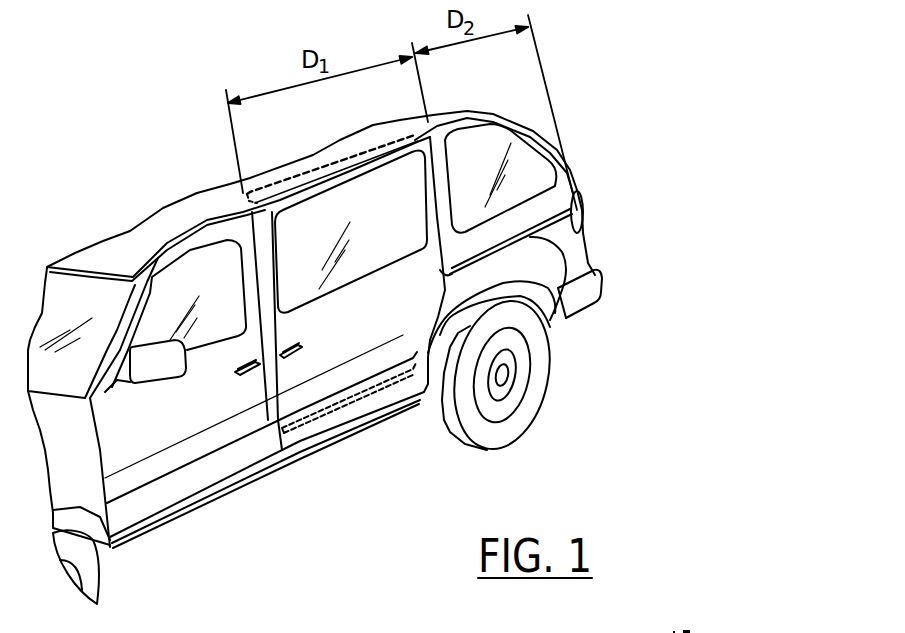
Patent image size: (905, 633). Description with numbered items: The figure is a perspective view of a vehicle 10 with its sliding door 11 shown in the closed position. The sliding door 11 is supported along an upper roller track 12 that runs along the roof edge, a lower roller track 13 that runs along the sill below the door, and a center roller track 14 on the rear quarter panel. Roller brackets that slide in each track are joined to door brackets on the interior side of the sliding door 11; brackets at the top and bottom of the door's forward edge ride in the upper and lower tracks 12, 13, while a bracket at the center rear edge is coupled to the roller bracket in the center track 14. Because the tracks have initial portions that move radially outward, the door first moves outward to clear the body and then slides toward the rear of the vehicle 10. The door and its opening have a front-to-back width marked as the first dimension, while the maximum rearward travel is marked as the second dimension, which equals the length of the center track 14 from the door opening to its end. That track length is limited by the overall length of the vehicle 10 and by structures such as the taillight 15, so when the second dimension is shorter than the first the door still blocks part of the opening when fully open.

The vehicle 10 is at (141, 552).
The sliding door 11 is at (400, 347).
The upper roller track 12 is at (264, 194).
The lower roller track 13 is at (309, 429).
The center roller track 14 is at (578, 310).
The taillight 15 is at (586, 211).